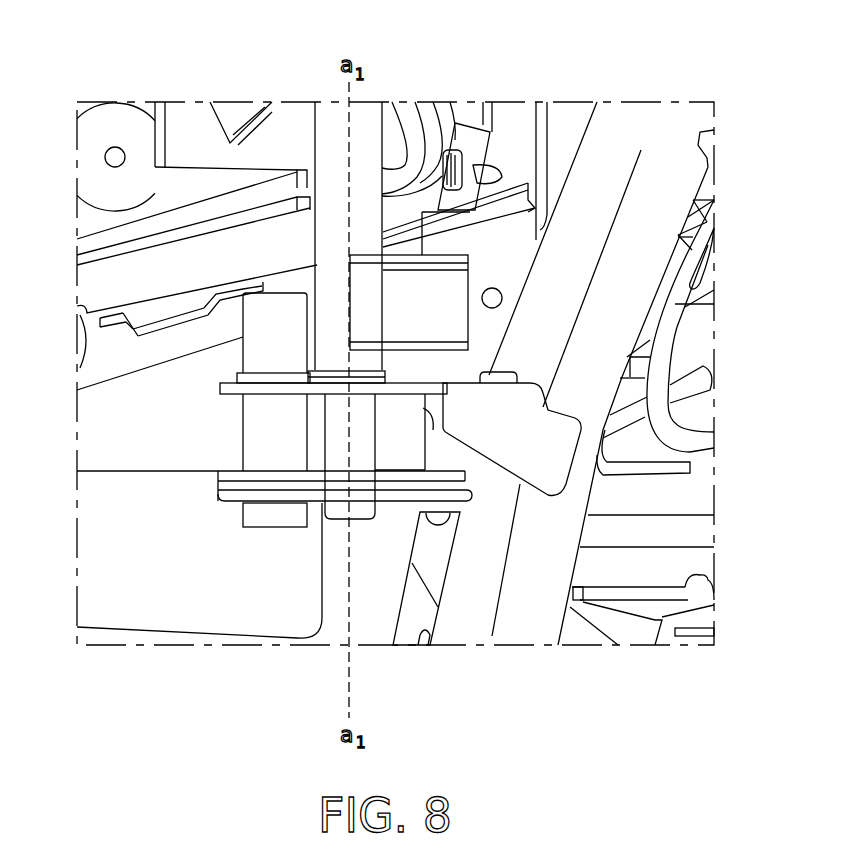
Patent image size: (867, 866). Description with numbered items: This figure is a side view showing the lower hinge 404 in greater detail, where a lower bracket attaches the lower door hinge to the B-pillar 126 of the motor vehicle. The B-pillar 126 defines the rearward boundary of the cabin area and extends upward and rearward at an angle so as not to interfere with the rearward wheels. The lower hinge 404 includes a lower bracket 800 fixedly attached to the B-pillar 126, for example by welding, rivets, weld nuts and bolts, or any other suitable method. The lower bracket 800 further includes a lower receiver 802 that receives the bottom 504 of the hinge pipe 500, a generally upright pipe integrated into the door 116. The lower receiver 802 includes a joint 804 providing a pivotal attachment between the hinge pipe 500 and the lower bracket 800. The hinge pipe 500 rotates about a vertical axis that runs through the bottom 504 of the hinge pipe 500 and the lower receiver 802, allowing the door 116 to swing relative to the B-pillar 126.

The door 116 is at (200, 233).
The B-pillar 126 is at (617, 268).
The lower hinge 404 is at (262, 578).
The hinge pipe 500 is at (337, 133).
The bottom of the hinge pipe 504 is at (348, 312).
The lower bracket 800 is at (467, 447).
The lower receiver 802 is at (362, 428).
The joint 804 is at (336, 368).